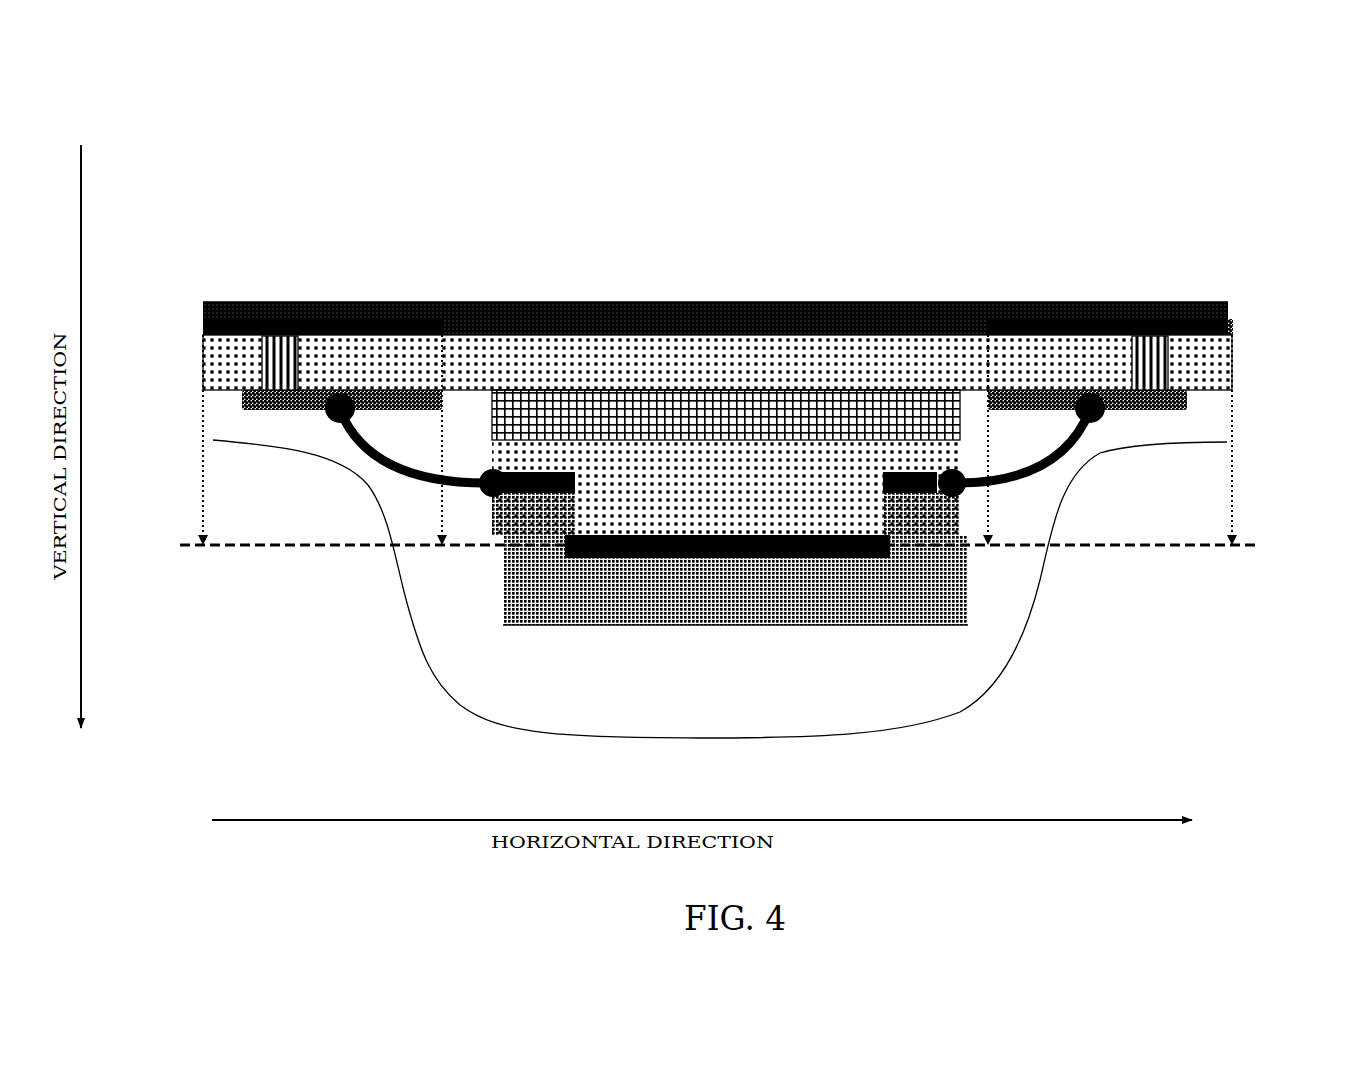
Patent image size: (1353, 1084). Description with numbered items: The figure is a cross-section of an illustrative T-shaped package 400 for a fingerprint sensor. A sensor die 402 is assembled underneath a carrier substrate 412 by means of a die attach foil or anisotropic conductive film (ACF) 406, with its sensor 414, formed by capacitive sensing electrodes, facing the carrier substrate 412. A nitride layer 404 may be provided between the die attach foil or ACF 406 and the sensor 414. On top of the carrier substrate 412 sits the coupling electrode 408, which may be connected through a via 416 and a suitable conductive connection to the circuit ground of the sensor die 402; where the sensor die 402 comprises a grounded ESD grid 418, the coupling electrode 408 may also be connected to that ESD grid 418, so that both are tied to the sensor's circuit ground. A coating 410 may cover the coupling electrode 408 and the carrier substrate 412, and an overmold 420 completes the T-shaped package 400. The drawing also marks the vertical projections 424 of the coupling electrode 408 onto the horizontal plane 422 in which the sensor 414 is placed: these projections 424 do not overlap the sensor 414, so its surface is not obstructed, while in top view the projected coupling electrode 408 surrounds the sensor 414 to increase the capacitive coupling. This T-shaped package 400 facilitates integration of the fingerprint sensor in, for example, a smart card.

The T-shaped package 400 is at (440, 168).
The sensor die 402 is at (796, 608).
The nitride layer 404 is at (795, 473).
The die attach foil or anisotropic conductive film (ACF) 406 is at (880, 427).
The coupling electrode 408 is at (1113, 242).
The coating 410 is at (747, 302).
The carrier substrate 412 is at (857, 375).
The sensor 414 is at (563, 547).
The via 416 is at (272, 366).
The ESD grid 418 is at (933, 492).
The overmold 420 is at (682, 741).
The horizontal plane 422 is at (1185, 547).
The vertical projection 424 is at (442, 500).